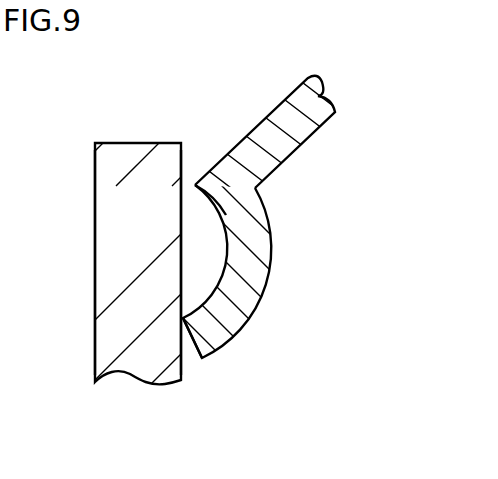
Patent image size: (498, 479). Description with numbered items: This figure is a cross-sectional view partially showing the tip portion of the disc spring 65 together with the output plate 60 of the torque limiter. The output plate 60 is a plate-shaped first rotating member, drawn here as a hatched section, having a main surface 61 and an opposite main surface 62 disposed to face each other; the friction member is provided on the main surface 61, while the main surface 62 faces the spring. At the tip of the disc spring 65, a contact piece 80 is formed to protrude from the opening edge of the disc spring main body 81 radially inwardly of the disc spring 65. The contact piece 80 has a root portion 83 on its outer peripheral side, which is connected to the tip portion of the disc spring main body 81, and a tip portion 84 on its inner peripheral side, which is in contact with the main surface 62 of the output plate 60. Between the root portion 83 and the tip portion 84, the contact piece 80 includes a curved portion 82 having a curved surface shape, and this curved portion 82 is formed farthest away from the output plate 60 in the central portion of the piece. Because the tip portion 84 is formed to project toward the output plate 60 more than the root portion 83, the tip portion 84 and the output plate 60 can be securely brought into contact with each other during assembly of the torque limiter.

The output plate 60 is at (140, 366).
The main surface 61 is at (95, 283).
The main surface 62 is at (183, 366).
The disc spring 65 is at (223, 90).
The contact piece 80 is at (224, 208).
The disc spring main body 81 is at (287, 118).
The curved portion 82 is at (256, 268).
The root portion 83 is at (212, 199).
The tip portion 84 is at (195, 337).